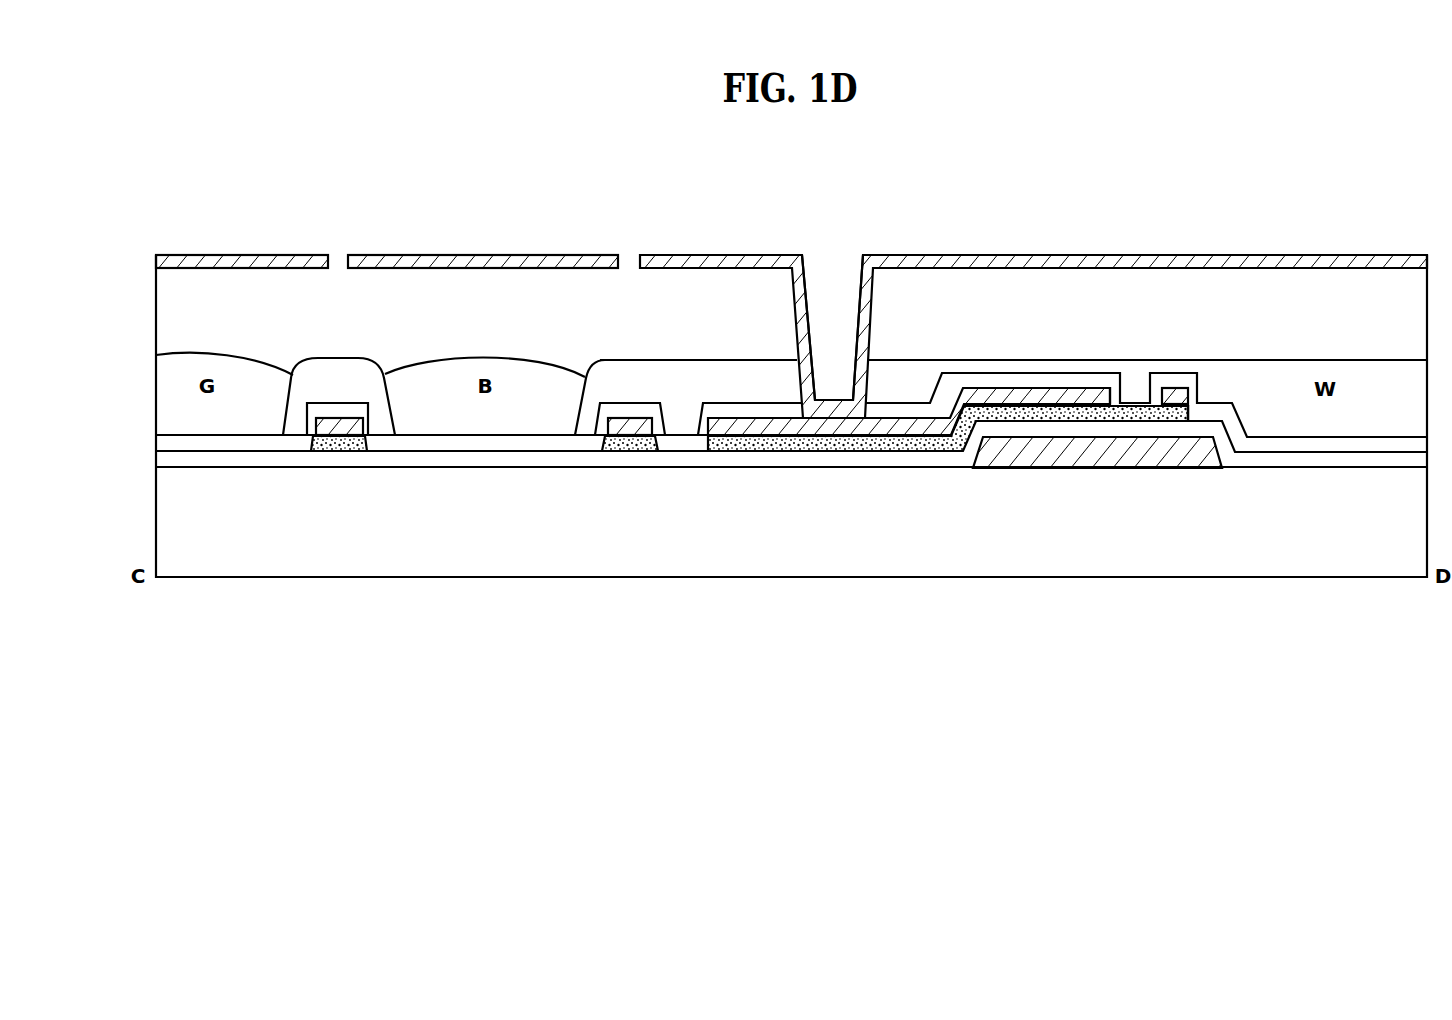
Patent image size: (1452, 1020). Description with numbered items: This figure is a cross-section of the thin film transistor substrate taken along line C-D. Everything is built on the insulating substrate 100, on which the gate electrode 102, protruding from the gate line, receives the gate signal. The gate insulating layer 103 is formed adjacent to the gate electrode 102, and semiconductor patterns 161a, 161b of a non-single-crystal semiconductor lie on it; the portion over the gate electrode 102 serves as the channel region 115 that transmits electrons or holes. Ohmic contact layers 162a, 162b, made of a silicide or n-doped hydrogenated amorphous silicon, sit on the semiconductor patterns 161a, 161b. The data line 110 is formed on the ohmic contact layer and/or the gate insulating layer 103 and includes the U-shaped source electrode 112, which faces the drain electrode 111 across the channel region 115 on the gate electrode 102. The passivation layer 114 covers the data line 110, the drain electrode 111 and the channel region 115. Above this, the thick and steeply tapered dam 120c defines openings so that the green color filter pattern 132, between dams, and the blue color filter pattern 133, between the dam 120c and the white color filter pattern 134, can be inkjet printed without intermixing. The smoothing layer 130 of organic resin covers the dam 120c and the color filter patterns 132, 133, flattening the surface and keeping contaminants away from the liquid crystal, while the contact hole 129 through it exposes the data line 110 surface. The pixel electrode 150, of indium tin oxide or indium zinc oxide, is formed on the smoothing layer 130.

The insulating substrate 100 is at (435, 538).
The gate electrode 102 is at (1095, 460).
The gate insulating layer 103 is at (800, 458).
The data line 110 is at (630, 427).
The drain electrode 111 is at (875, 428).
The source electrode 112 is at (1177, 397).
The passivation layer 114 is at (1352, 445).
The channel region 115 is at (1135, 417).
The dam 120c is at (353, 375).
The contact hole 129 is at (833, 267).
The smoothing layer 130 is at (487, 330).
The green color filter pattern 132 is at (192, 367).
The blue color filter pattern 133 is at (497, 397).
The white color filter pattern 134 is at (1282, 395).
The pixel electrode 150 is at (1123, 268).
The semiconductor pattern 161a is at (1050, 415).
The semiconductor pattern 161b is at (347, 448).
The ohmic contact layer 162a is at (995, 403).
The ohmic contact layer 162b is at (322, 452).